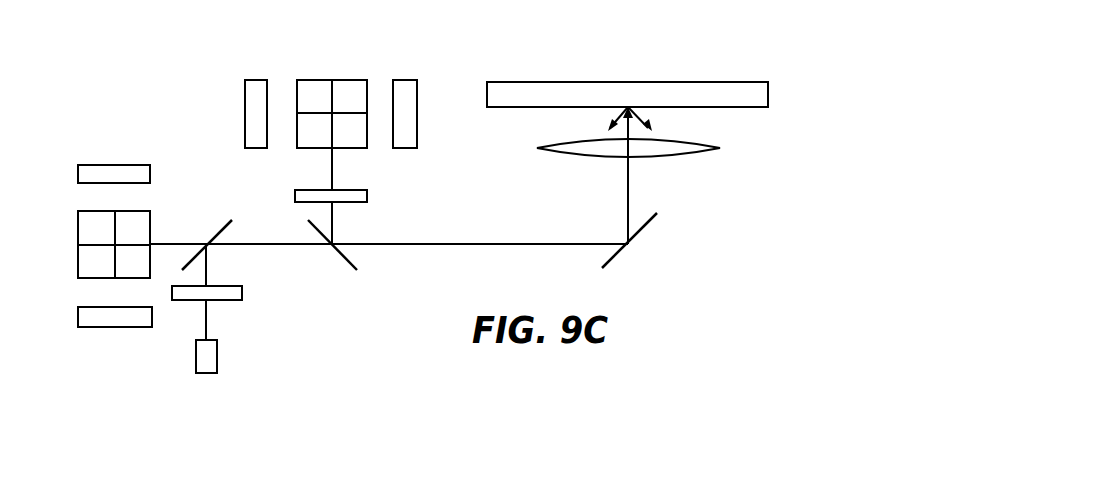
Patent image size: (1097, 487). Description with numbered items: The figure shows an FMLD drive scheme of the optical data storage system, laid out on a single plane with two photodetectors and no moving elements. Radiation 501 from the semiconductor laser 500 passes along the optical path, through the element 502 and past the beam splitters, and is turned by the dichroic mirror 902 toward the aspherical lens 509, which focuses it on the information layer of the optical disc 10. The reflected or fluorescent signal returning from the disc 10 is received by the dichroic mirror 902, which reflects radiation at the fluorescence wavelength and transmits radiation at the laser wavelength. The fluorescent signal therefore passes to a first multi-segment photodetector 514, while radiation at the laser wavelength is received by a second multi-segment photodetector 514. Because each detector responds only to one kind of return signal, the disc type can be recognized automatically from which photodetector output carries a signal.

The optical disc 10 is at (735, 65).
The semiconductor laser 500 is at (217, 360).
The radiation 501 is at (206, 324).
The collimating lens 502 is at (242, 293).
The aspherical lens 509 is at (720, 150).
The multi-segment photodetector 514 is at (78, 223).
The dichroic mirror 902 is at (620, 250).